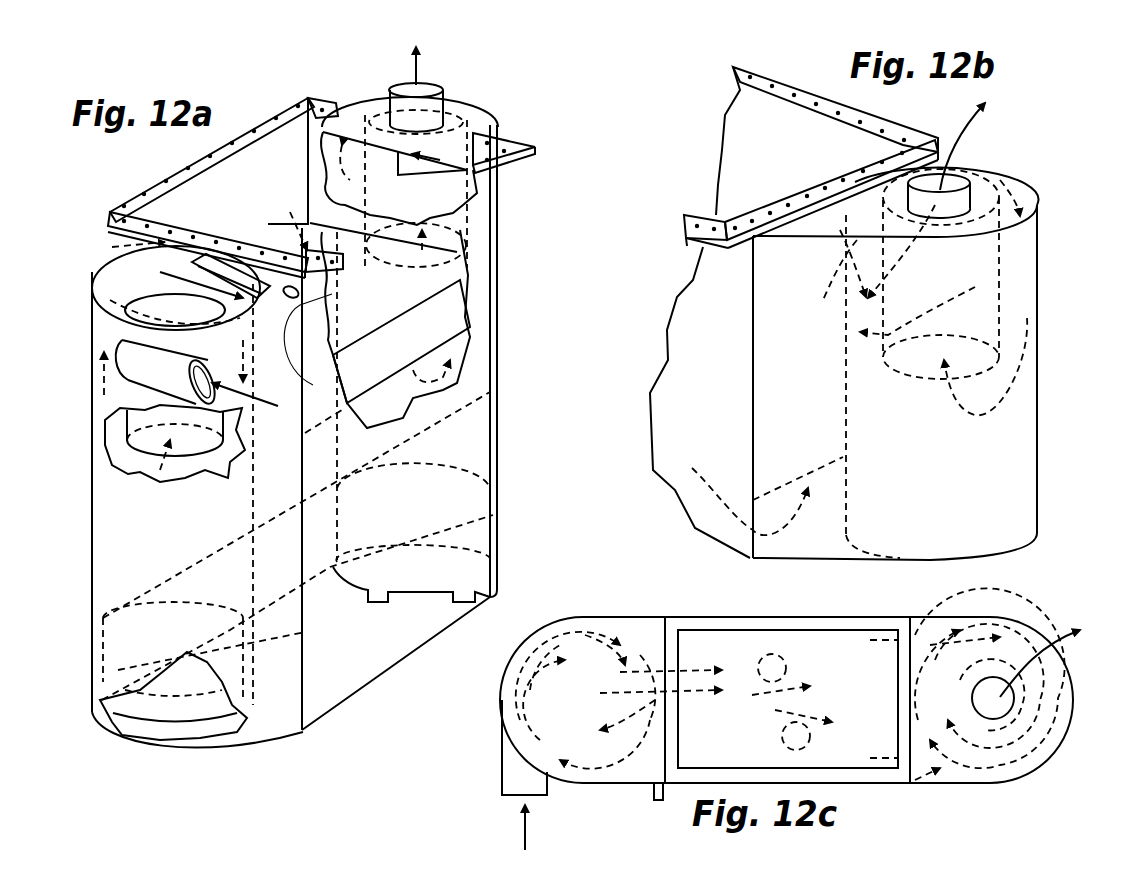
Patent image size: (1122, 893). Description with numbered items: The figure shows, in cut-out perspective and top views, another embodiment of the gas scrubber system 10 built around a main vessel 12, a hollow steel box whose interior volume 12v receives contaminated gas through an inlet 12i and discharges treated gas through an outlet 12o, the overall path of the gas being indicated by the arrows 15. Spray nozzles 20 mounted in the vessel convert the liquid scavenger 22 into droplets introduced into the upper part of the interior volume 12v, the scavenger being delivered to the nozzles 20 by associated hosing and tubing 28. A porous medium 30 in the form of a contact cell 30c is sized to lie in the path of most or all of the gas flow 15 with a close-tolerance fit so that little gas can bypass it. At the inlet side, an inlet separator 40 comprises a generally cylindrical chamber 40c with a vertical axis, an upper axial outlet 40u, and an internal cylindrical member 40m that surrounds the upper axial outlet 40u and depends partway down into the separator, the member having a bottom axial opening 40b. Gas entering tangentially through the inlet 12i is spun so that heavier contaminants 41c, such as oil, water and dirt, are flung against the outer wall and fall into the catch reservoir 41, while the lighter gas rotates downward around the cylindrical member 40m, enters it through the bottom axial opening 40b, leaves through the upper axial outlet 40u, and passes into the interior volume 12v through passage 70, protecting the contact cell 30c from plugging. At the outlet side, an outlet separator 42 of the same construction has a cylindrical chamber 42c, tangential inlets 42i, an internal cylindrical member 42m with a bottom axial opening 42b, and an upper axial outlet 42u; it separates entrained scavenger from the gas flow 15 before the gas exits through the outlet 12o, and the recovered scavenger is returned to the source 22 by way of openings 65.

In FIG. 12A, the scrubber system 10 is at (615, 272).
In FIG. 12B, the scrubber system 10 is at (592, 568).
In FIG. 12C, the scrubber system 10 is at (745, 655).
In FIG. 12A, the main vessel 12 is at (237, 201).
In FIG. 12B, the main vessel 12 is at (816, 131).
In FIG. 12C, the main vessel 12 is at (693, 613).
In FIG. 12A, the inlet 12i is at (175, 377).
In FIG. 12C, the inlet 12i is at (496, 802).
In FIG. 12B, the outlet 12o is at (1000, 176).
In FIG. 12C, the outlet 12o is at (1005, 715).
In FIG. 12B, the interior volume 12v is at (732, 188).
In FIG. 12C, the interior volume 12v is at (760, 724).
In FIG. 12A, the flow of gas 15 is at (277, 258).
In FIG. 12B, the flow of gas 15 is at (859, 319).
In FIG. 12C, the flow of gas 15 is at (798, 719).
In FIG. 12A, the spray nozzle 20 is at (183, 260).
In FIG. 12A, the passage 70 is at (194, 264).
In FIG. 12A, the liquid scavenger source 22 is at (333, 604).
In FIG. 12A, the hosing and tubing 28 is at (308, 349).
In FIG. 12C, the hosing and tubing 28 is at (652, 792).
In FIG. 12A, the porous medium 30 is at (387, 331).
In FIG. 12A, the contact cell 30c is at (398, 307).
In FIG. 12A, the inlet separator 40 is at (265, 497).
In FIG. 12A, the upper axial outlet 40u is at (150, 313).
In FIG. 12A, the internal cylindrical member 40m is at (122, 442).
In FIG. 12A, the bottom axial opening 40b is at (150, 455).
In FIG. 12A, the cylindrical chamber 40c is at (186, 527).
In FIG. 12A, the catch reservoir 41 is at (144, 698).
In FIG. 12C, the catch reservoir 41 is at (495, 703).
In FIG. 12A, the contaminants 41c is at (182, 744).
In FIG. 12A, the outlet separator 42 is at (502, 108).
In FIG. 12B, the outlet separator 42 is at (895, 364).
In FIG. 12C, the outlet separator 42 is at (1028, 616).
In FIG. 12B, the tangential inlets 42i is at (865, 253).
In FIG. 12C, the tangential inlets 42i is at (942, 630).
In FIG. 12B, the upper axial outlet 42u is at (955, 188).
In FIG. 12B, the internal cylindrical member 42m is at (1003, 315).
In FIG. 12B, the bottom axial opening 42b is at (916, 387).
In FIG. 12B, the cylindrical chamber 42c is at (968, 485).
In FIG. 12A, the openings 65 is at (418, 606).